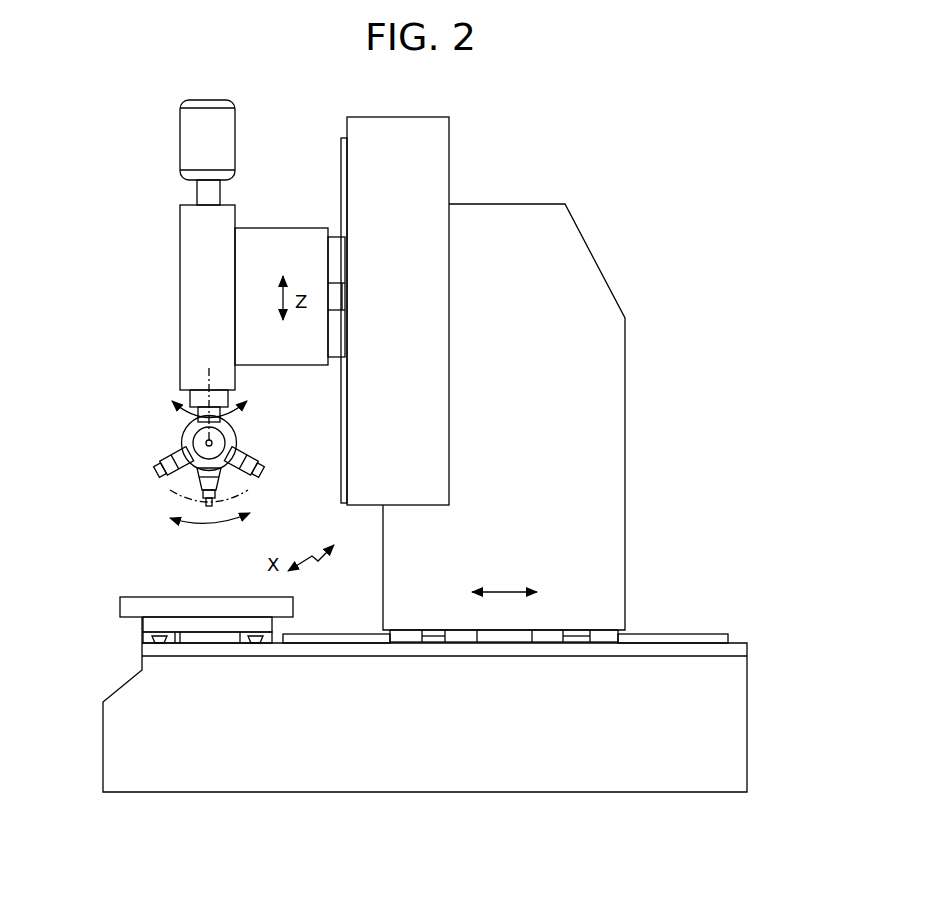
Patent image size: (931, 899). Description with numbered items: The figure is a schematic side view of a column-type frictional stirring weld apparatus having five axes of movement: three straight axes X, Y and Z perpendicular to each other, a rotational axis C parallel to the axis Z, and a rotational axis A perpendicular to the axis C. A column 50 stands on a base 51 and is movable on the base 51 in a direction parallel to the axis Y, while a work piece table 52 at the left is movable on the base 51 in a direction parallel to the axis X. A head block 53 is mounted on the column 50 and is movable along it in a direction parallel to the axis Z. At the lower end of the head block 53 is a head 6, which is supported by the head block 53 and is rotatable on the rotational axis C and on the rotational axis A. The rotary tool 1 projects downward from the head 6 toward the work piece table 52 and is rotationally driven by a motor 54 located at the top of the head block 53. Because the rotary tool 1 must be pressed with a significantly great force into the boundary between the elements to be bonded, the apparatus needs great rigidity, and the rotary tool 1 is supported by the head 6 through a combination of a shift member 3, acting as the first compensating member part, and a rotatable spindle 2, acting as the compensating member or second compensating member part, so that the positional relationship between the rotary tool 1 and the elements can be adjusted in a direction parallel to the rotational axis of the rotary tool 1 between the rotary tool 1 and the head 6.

The rotary tool 1 is at (188, 507).
The rotatable spindle 2 is at (246, 480).
The shift member 3 is at (172, 483).
The head 6 is at (188, 433).
The column 50 is at (615, 483).
The base 51 is at (732, 711).
The work piece table 52 is at (128, 606).
The head block 53 is at (190, 284).
The motor 54 is at (190, 134).